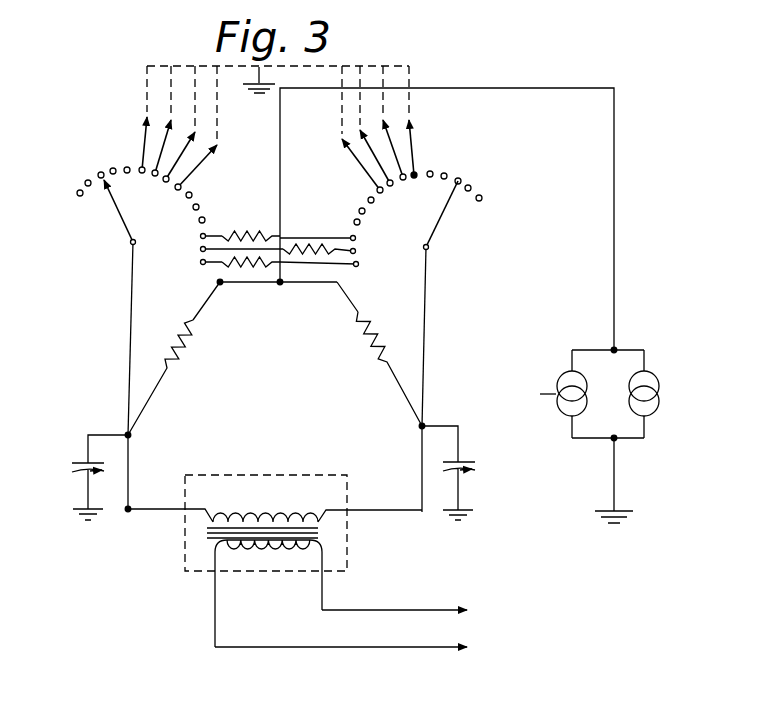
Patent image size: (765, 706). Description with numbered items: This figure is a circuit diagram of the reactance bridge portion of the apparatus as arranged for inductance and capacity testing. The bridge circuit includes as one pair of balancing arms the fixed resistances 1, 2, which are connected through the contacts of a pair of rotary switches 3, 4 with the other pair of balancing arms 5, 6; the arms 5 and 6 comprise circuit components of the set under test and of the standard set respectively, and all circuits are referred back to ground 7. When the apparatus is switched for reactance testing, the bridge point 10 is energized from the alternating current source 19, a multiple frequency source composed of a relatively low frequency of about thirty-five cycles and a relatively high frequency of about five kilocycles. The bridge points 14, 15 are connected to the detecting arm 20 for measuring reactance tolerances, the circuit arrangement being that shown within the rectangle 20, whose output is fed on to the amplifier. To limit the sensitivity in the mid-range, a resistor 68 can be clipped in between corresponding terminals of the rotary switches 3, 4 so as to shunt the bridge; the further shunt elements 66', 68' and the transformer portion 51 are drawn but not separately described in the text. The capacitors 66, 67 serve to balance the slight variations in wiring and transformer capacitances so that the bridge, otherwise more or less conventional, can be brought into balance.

The fixed resistance 1 is at (197, 349).
The fixed resistance 2 is at (362, 344).
The rotary switch 3 is at (126, 241).
The rotary switch 4 is at (432, 256).
The balancing arm 5 is at (152, 97).
The balancing arm 6 is at (402, 84).
The ground 7 is at (257, 92).
The bridge point 10 is at (280, 285).
The bridge point 14 is at (134, 437).
The bridge point 15 is at (416, 428).
The alternating current source 19 is at (632, 352).
The reactance bridge detecting arm 20 is at (346, 553).
The transformer 51 is at (190, 538).
The capacitor 66 is at (82, 476).
The capacitor 67 is at (460, 463).
The resistor 68 is at (246, 279).
The resistors 66' is at (241, 233).
The resistors 68' is at (319, 234).